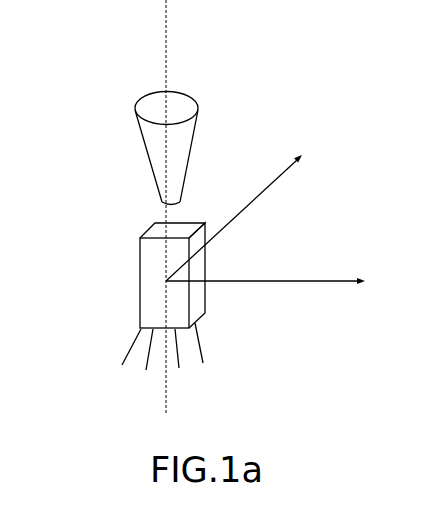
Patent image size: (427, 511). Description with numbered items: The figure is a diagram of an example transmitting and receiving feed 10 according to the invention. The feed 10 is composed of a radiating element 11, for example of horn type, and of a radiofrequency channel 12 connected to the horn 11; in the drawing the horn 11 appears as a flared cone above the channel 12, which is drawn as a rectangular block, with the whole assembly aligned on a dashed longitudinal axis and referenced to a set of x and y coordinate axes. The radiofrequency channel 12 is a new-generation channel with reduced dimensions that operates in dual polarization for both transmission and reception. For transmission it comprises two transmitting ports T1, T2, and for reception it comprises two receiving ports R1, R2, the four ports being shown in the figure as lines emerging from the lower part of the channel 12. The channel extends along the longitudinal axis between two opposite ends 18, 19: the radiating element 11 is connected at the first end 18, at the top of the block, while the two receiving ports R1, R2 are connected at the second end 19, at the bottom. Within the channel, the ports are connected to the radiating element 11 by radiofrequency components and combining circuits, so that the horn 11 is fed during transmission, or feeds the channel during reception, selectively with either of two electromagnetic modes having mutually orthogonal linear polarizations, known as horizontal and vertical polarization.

The transmitting and receiving feed 10 is at (84, 215).
The radiating element 11 is at (178, 142).
The radiofrequency channel 12 is at (173, 253).
The first end 18 is at (183, 227).
The second end 19 is at (199, 318).
The first transmitting port T1 is at (128, 351).
The second transmitting port T2 is at (151, 349).
The first receiving port R1 is at (178, 353).
The second receiving port R2 is at (197, 337).